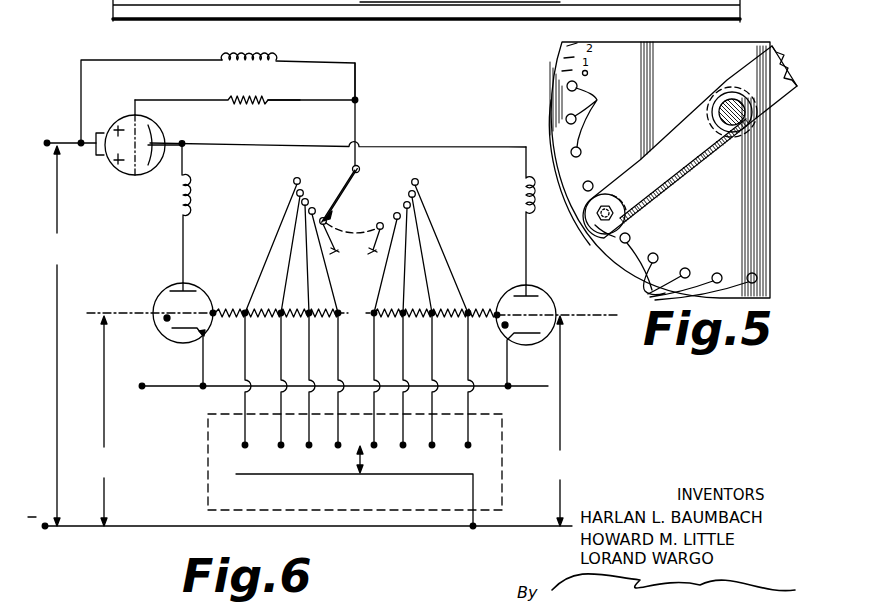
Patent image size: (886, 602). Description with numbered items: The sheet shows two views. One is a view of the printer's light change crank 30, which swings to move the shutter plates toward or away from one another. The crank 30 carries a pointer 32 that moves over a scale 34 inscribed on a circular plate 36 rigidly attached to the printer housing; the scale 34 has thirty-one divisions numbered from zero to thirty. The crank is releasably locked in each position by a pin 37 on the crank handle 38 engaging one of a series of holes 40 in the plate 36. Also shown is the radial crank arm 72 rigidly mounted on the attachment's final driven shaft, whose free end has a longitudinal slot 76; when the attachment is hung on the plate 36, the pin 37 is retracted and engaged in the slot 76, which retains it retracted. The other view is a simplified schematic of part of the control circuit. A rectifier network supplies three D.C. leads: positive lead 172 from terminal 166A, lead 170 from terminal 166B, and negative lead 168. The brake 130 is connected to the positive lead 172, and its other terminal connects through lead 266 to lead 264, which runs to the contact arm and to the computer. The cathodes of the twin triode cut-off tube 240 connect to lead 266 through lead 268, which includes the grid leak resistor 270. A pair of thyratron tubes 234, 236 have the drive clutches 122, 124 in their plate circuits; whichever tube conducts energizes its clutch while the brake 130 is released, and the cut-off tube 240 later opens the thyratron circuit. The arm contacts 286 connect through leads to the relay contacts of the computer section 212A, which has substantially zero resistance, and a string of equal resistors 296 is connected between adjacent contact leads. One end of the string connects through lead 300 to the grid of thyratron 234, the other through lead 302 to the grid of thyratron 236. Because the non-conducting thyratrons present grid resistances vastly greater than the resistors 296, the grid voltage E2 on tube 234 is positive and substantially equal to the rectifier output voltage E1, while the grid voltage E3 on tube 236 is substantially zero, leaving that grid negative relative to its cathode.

In FIG. 6, the brake 130 is at (267, 61).
In FIG. 6, the lead 264 is at (353, 69).
In FIG. 6, the lead 266 is at (318, 61).
In FIG. 6, the grid leak resistor 270 is at (262, 98).
In FIG. 6, the lead 268 is at (290, 107).
In FIG. 6, the twin triode power tube 240 is at (135, 177).
In FIG. 6, the D.C. supply lead 172 is at (72, 141).
In FIG. 6, the output terminal 166A is at (45, 142).
In FIG. 6, the clutch 122 is at (177, 217).
In FIG. 6, the clutch 124 is at (520, 201).
In FIG. 6, the output voltage E1 is at (57, 336).
In FIG. 6, the voltage E2 is at (104, 421).
In FIG. 6, the voltage E3 is at (560, 421).
In FIG. 6, the thyratron tube 234 is at (202, 290).
In FIG. 6, the thyratron tube 236 is at (517, 292).
In FIG. 6, the resistors 296 is at (256, 317).
In FIG. 6, the lead 300 is at (222, 317).
In FIG. 6, the lead 302 is at (496, 319).
In FIG. 6, the arm contacts 286 is at (433, 182).
In FIG. 6, the D.C. supply lead 170 is at (160, 389).
In FIG. 6, the output terminal 166B is at (166, 372).
In FIG. 6, the computer section 212A is at (208, 483).
In FIG. 6, the D.C. supply lead 168 is at (131, 529).
In FIG. 5, the scale 34 is at (591, 60).
In FIG. 5, the circular plate 36 is at (547, 107).
In FIG. 5, the holes 40 is at (661, 198).
In FIG. 5, the pin 37 is at (638, 172).
In FIG. 5, the light change crank 30 is at (728, 80).
In FIG. 5, the pointer 32 is at (784, 50).
In FIG. 5, the crank arm 72 is at (675, 138).
In FIG. 5, the longitudinal slot 76 is at (658, 211).
In FIG. 5, the crank handle 38 is at (636, 233).